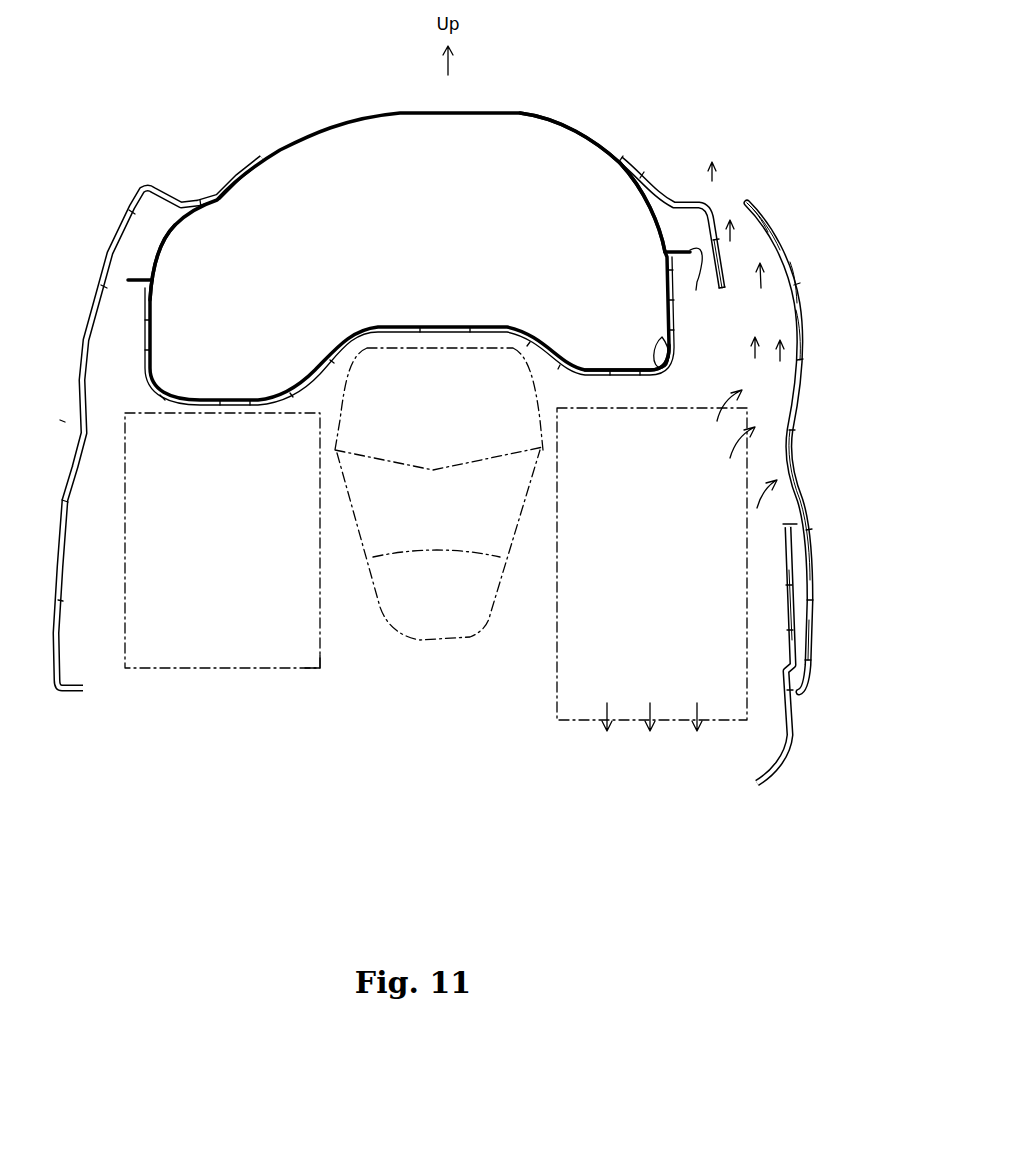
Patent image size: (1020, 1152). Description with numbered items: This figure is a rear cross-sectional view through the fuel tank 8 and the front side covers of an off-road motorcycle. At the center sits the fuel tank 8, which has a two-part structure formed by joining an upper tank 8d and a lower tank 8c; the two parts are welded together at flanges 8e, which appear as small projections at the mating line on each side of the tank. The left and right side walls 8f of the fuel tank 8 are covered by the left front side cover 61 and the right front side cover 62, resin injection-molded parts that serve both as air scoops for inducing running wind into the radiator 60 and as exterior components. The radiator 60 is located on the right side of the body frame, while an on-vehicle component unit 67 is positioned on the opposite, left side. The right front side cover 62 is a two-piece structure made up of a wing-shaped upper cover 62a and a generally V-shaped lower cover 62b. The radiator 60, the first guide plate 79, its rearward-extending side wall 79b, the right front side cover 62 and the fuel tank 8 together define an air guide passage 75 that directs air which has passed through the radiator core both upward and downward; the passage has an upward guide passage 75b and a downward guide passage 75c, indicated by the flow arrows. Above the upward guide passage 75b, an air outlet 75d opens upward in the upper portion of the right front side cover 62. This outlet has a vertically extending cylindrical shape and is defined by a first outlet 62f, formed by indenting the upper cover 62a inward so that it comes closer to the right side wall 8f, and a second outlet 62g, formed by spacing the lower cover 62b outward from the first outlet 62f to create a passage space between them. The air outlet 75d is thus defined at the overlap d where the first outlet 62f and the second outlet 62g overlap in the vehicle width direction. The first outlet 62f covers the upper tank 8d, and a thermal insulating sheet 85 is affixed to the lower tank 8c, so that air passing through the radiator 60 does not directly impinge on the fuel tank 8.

The fuel tank 8 is at (520, 102).
The lower tank 8c is at (651, 376).
The upper tank 8d is at (583, 121).
The flange 8e is at (418, 278).
The side wall 8f is at (160, 238).
The left front side cover 61 is at (96, 226).
The right front side cover 62 is at (799, 251).
The upper cover 62a is at (643, 158).
The lower cover 62b is at (797, 278).
The first outlet 62f is at (735, 266).
The second outlet 62g is at (764, 242).
The overlap d is at (783, 224).
The on-vehicle component unit 67 is at (325, 662).
The radiator 60 is at (554, 671).
The air guide passage 75 is at (786, 380).
The upward guide passage 75b is at (778, 332).
The downward guide passage 75c is at (768, 641).
The air outlet 75d is at (740, 206).
The first guide plate 79 is at (794, 556).
The side wall 79b is at (793, 594).
The thermal insulating sheet 85 is at (588, 375).